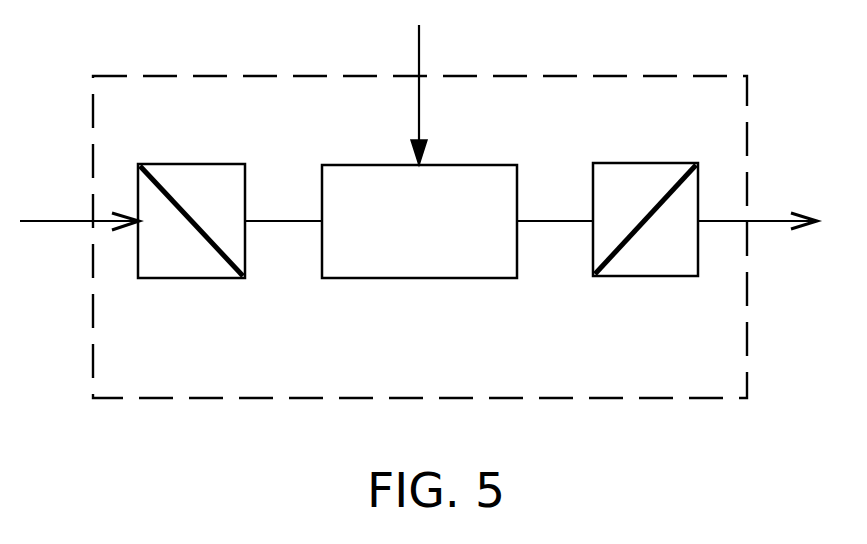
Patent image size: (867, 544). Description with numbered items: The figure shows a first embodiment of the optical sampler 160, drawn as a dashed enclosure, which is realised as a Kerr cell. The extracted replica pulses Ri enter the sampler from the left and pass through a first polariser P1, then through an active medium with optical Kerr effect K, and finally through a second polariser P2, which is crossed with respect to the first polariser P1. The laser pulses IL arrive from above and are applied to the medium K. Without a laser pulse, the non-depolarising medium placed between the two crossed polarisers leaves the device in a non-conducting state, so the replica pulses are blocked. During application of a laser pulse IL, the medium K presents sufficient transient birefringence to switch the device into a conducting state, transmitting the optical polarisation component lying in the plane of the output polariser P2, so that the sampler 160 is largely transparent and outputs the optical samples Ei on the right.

The optical sampler 160 is at (170, 385).
The extracted replica pulses Ri is at (77, 221).
The first polariser P1 is at (198, 175).
The active medium with optical Kerr effect K is at (477, 180).
The laser pulses IL is at (419, 60).
The second polariser P2 is at (652, 182).
The optical samples Ei is at (757, 222).